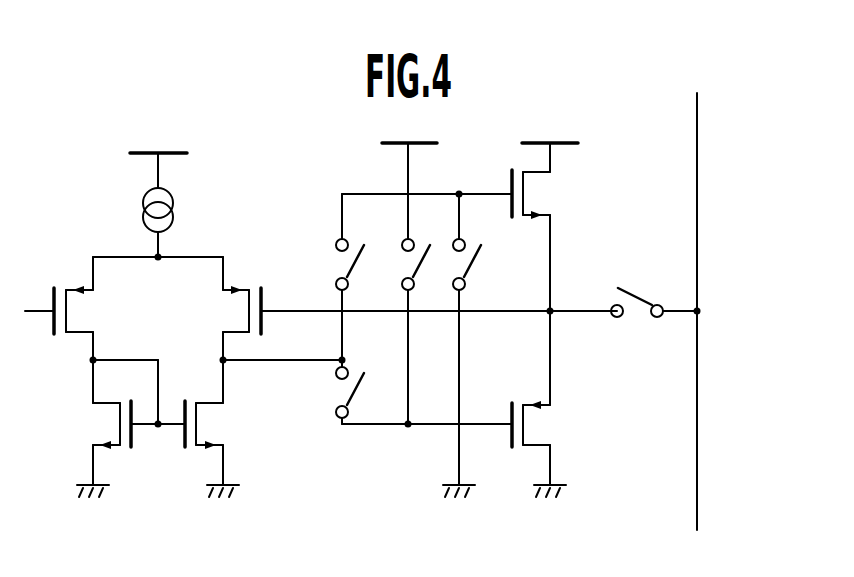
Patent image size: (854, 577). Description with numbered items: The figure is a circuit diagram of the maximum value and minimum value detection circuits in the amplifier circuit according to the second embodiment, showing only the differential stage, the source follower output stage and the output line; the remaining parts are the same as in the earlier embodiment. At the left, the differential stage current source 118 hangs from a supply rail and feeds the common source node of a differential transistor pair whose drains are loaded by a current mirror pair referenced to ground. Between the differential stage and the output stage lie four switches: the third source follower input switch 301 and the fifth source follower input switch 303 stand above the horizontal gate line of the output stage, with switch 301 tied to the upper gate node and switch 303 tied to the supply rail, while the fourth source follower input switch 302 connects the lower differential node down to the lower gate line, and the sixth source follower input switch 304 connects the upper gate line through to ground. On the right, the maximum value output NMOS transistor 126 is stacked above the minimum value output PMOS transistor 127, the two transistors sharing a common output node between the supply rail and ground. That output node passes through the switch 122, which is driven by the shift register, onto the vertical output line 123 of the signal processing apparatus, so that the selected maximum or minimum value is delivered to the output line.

The differential stage current source 118 is at (141, 212).
The third source follower input switch 301 is at (340, 262).
The fourth source follower input switch 302 is at (340, 394).
The fifth source follower input switch 303 is at (404, 265).
The sixth source follower input switch 304 is at (472, 268).
The maximum value output NMOS transistor 126 is at (548, 192).
The minimum value output PMOS transistor 127 is at (548, 427).
The switch 122 is at (639, 291).
The output line 123 is at (697, 147).